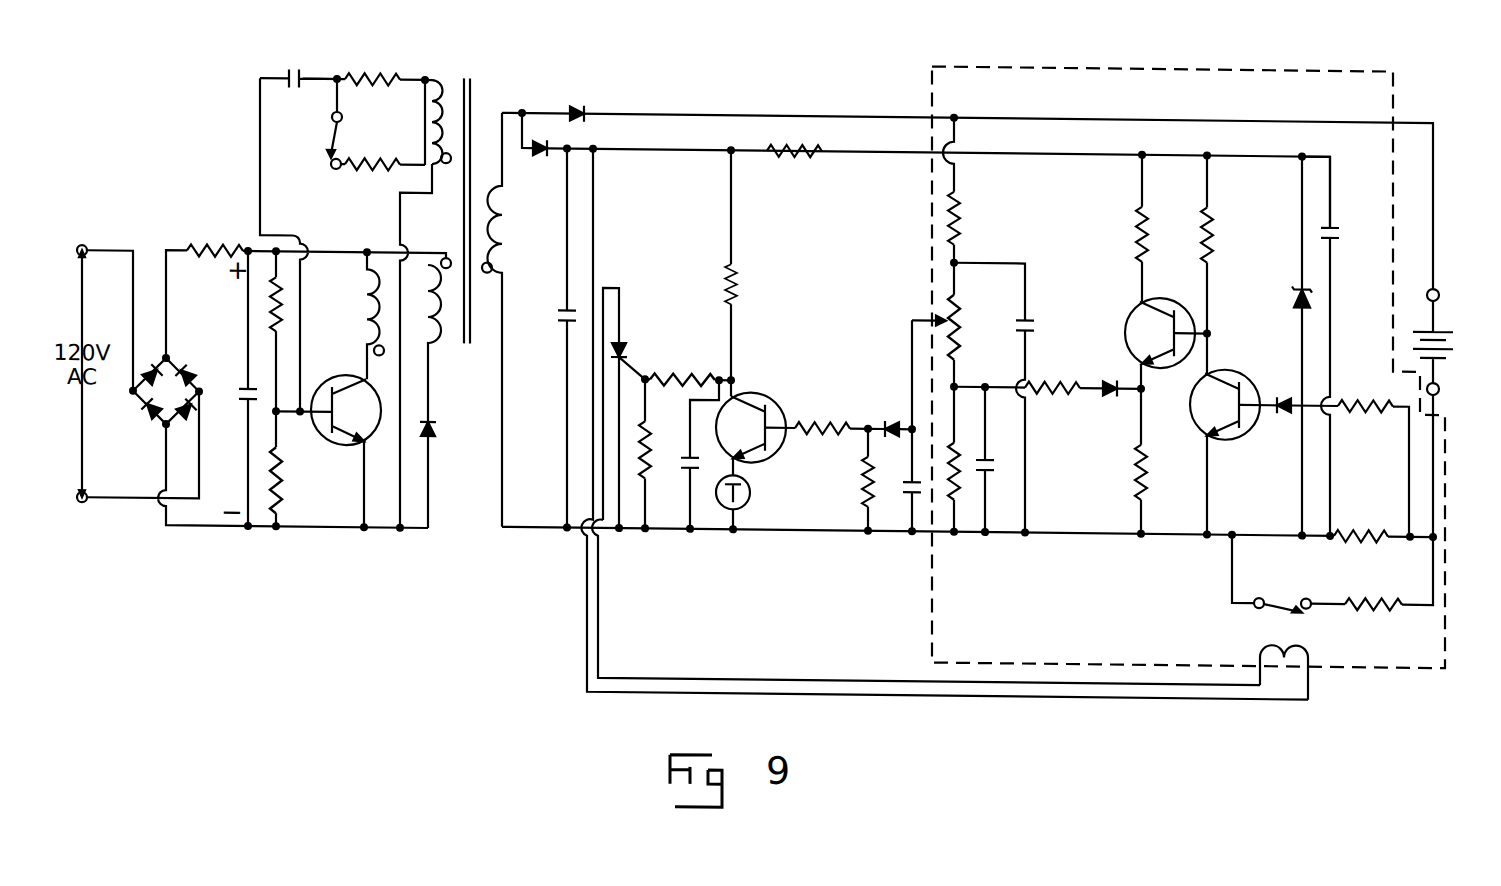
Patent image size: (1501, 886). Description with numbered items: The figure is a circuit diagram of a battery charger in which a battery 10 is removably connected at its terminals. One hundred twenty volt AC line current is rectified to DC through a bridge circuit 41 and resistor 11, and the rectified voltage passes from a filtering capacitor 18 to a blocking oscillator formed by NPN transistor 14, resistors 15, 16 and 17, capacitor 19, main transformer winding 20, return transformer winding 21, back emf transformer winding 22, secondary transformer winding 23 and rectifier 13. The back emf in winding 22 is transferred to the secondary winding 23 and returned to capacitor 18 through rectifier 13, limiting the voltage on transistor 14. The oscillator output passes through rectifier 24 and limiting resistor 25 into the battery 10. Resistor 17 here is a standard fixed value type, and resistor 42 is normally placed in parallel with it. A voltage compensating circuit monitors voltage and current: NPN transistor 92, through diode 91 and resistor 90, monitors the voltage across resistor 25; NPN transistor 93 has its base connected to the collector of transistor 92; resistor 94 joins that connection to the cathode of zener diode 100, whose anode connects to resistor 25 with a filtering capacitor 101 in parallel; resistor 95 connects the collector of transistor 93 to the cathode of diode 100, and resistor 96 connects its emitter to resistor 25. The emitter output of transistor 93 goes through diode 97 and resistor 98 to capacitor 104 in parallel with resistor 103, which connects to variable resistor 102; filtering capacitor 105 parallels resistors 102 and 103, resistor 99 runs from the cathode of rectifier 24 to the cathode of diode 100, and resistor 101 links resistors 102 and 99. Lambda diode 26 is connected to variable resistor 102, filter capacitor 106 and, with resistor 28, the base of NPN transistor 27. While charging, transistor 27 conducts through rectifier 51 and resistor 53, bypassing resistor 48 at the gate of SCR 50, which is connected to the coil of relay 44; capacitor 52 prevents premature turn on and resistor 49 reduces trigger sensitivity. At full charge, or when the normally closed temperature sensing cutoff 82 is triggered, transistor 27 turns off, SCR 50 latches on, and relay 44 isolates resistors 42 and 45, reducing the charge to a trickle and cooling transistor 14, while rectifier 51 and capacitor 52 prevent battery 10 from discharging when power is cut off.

The battery 10 is at (1456, 334).
The resistor 11 is at (206, 244).
The rectifier 13 is at (434, 448).
The NPN transistor 14 is at (338, 464).
The resistor 15 is at (272, 328).
The resistor 16 is at (280, 460).
The resistor 17 is at (384, 70).
The filtering capacitor 18 is at (242, 410).
The capacitor 19 is at (294, 100).
The main transformer winding 20 is at (370, 318).
The return transformer winding 21 is at (447, 78).
The back emf transformer winding 22 is at (440, 358).
The secondary transformer winding 23 is at (505, 240).
The rectifier 24 is at (582, 104).
The limiting resistor 25 is at (1368, 536).
The lambda diode 26 is at (893, 416).
The NPN transistor 27 is at (769, 390).
The resistor 28 is at (816, 414).
The bridge circuit 41 is at (176, 360).
The resistor 42 is at (358, 178).
The relay 44 is at (310, 155).
The resistor 45 is at (1384, 604).
The resistor 48 is at (682, 366).
The resistor 49 is at (650, 442).
The SCR 50 is at (626, 342).
The rectifier 51 is at (542, 164).
The capacitor 52 is at (558, 331).
The resistor 53 is at (750, 278).
The temperature sensing cutoff 82 is at (756, 502).
The resistor 90 is at (1369, 404).
The diode 91 is at (1282, 408).
The NPN transistor 92 is at (1224, 436).
The NPN transistor 93 is at (1162, 364).
The resistor 94 is at (1215, 208).
The resistor 95 is at (1134, 244).
The resistor 96 is at (1150, 478).
The diode 97 is at (1112, 398).
The resistor 98 is at (1052, 390).
The resistor 99 is at (800, 158).
The zener diode 100 is at (1298, 304).
The filtering capacitor / resistor 101 is at (964, 210).
The variable resistor 102 is at (962, 306).
The resistor 103 is at (957, 500).
The capacitor 104 is at (992, 452).
The filtering capacitor 105 is at (1040, 314).
The filter capacitor 106 is at (907, 494).